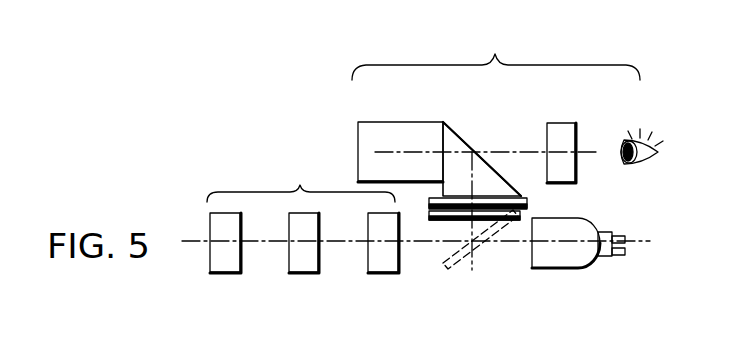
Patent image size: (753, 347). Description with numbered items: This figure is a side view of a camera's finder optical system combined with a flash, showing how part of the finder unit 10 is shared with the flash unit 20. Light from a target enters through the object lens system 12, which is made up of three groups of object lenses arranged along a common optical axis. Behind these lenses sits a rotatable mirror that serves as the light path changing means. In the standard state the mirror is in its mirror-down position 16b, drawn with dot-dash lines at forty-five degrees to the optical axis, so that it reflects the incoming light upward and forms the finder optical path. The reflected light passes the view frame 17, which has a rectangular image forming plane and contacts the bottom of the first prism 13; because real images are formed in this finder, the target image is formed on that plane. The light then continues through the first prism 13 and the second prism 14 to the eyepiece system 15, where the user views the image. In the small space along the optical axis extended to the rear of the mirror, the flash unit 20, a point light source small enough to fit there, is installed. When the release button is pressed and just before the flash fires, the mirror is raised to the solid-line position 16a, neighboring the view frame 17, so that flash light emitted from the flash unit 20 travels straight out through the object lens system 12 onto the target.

The finder unit 10 is at (507, 47).
The object lens system 12 is at (303, 217).
The first prism 13 is at (458, 160).
The second prism 14 is at (386, 124).
The eyepiece system 15 is at (562, 124).
The mirror raised position 16a is at (437, 222).
The mirror down position 16b is at (483, 245).
The view frame 17 is at (527, 205).
The flash unit 20 is at (578, 274).